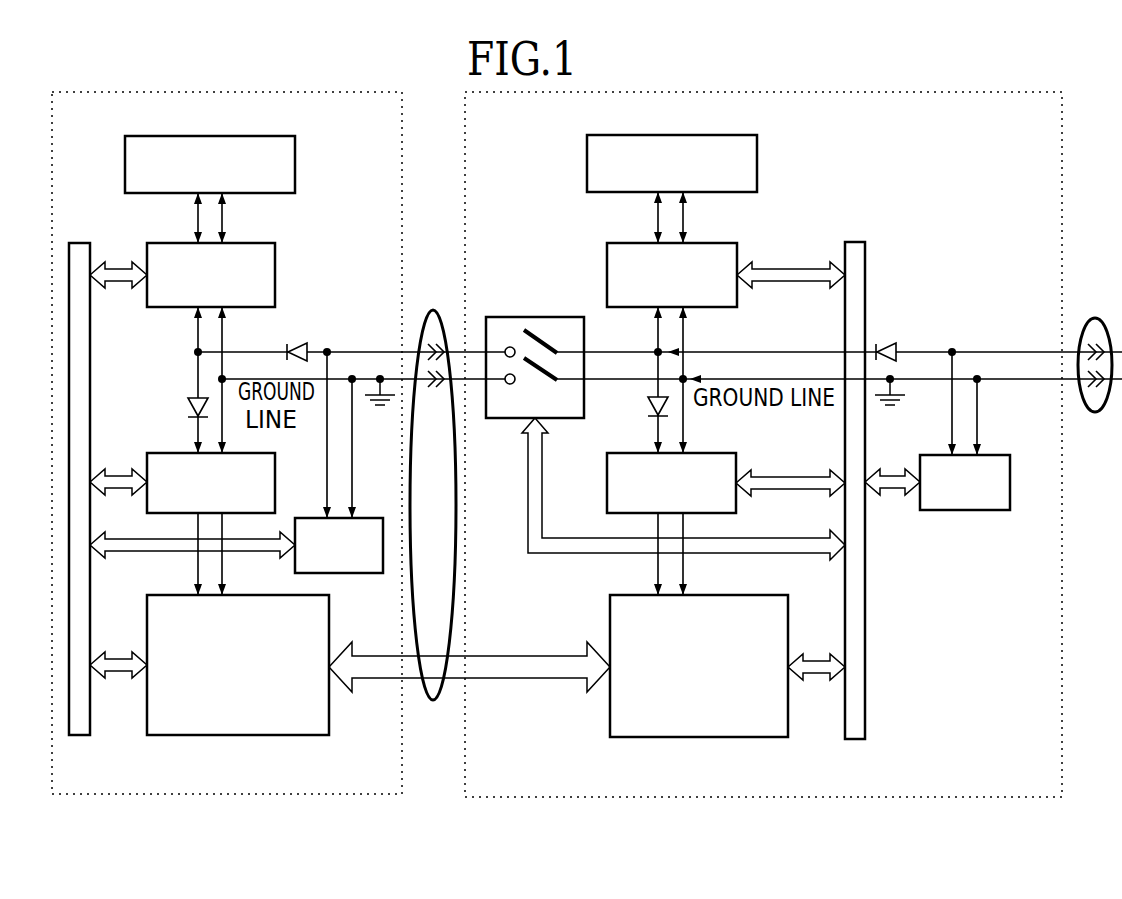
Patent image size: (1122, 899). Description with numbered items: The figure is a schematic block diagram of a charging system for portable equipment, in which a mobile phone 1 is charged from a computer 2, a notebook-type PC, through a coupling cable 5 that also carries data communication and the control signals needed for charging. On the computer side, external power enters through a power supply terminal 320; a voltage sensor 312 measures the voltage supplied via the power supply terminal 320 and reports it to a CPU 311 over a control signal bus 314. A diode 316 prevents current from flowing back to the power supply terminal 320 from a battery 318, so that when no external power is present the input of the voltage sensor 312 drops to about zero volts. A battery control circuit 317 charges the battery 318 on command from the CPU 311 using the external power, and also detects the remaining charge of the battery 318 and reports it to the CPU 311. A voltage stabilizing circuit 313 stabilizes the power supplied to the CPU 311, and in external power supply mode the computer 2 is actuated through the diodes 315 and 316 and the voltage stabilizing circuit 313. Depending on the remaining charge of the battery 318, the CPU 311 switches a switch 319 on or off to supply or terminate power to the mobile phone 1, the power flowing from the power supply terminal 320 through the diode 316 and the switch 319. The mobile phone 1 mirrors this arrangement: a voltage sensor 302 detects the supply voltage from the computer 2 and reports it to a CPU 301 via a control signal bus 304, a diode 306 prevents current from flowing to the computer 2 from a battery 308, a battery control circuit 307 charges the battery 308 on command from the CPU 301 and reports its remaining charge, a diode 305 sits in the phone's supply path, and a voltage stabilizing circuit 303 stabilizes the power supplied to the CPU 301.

The mobile phone 1 is at (88, 795).
The computer 2 is at (625, 797).
The coupling cable 5 is at (433, 702).
The CPU 301 is at (270, 736).
The voltage sensor 302 is at (368, 520).
The voltage stabilizing circuit 303 is at (277, 480).
The control signal bus 304 is at (90, 395).
The diode 305 is at (188, 405).
The diode 306 is at (298, 340).
The battery control circuit 307 is at (247, 243).
The battery 308 is at (297, 170).
The CPU 311 is at (665, 738).
The voltage sensor 312 is at (955, 512).
The voltage stabilizing circuit 313 is at (742, 462).
The control signal bus 314 is at (855, 242).
The diode 315 is at (646, 400).
The diode 316 is at (888, 340).
The battery control circuit 317 is at (738, 250).
The battery 318 is at (758, 165).
The switch 319 is at (522, 317).
The power supply terminal 320 is at (1095, 412).